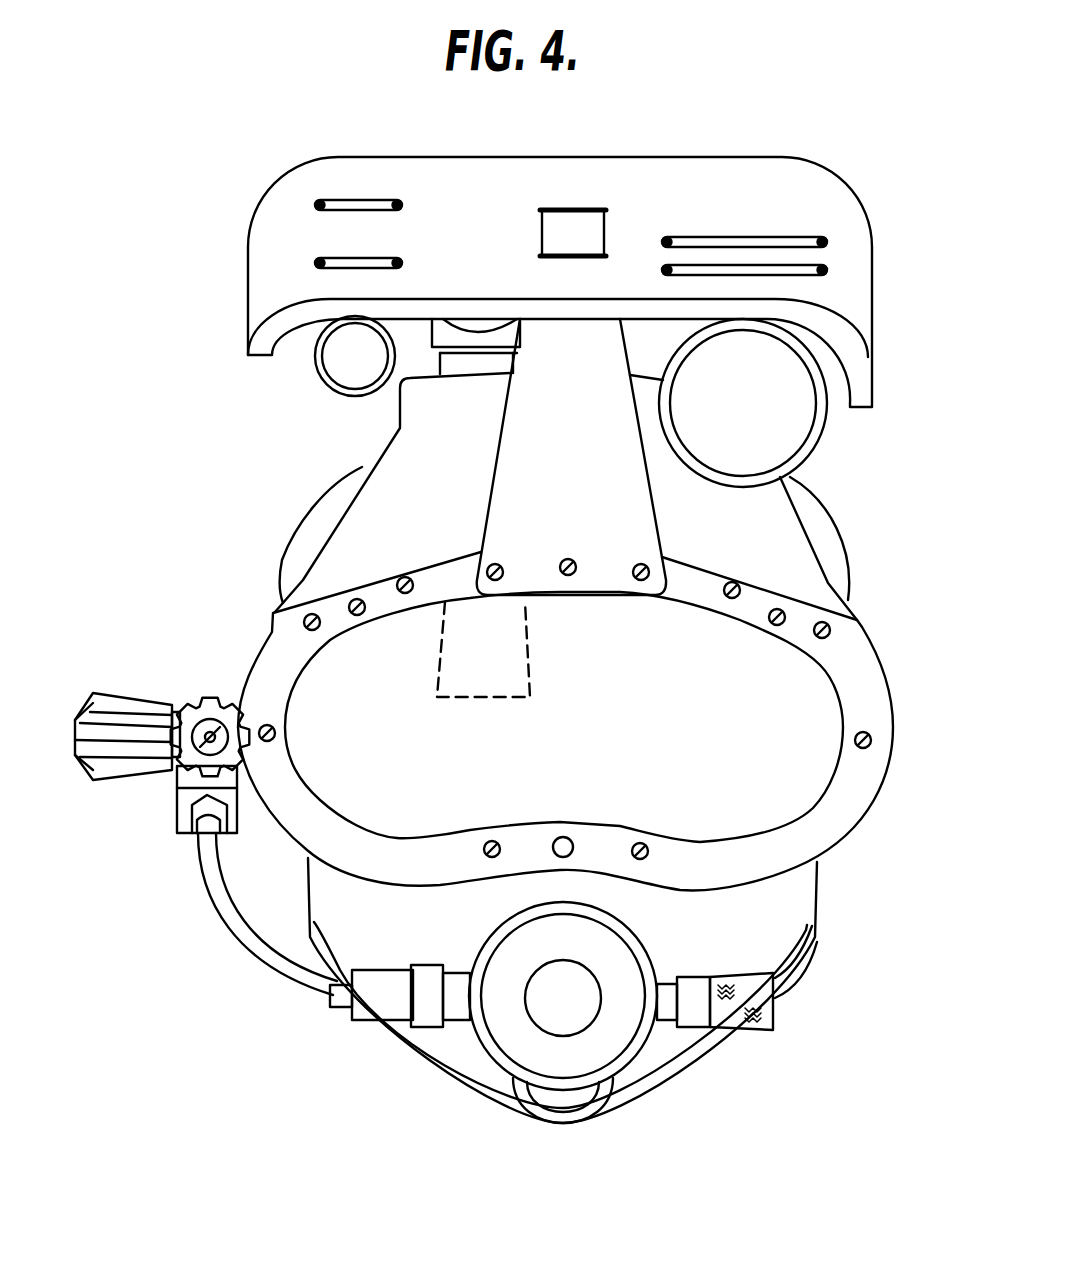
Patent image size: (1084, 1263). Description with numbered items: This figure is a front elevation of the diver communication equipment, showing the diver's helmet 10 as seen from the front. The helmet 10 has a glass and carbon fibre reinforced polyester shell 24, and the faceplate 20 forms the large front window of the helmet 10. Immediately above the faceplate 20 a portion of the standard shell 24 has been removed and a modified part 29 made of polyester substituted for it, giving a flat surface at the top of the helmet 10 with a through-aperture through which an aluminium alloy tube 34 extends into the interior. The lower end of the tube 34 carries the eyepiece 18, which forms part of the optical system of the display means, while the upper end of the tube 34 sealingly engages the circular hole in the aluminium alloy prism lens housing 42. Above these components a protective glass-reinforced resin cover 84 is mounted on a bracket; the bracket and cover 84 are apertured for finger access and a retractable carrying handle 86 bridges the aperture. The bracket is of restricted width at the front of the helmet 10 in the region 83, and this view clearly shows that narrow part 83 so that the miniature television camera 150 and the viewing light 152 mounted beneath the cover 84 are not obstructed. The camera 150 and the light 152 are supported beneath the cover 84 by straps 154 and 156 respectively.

The diver's helmet 10 is at (860, 601).
The eyepiece 18 is at (510, 663).
The faceplate 20 is at (592, 755).
The helmet shell 24 is at (447, 512).
The modified part 29 is at (417, 403).
The tube 34 is at (492, 360).
The prism lens housing 42 is at (437, 325).
The restricted-width region of bracket 83 is at (600, 514).
The protective cover 84 is at (768, 170).
The carrying handle 86 is at (578, 225).
The television camera 150 is at (323, 380).
The viewing light 152 is at (814, 432).
The strap 154 is at (345, 260).
The strap 156 is at (760, 270).